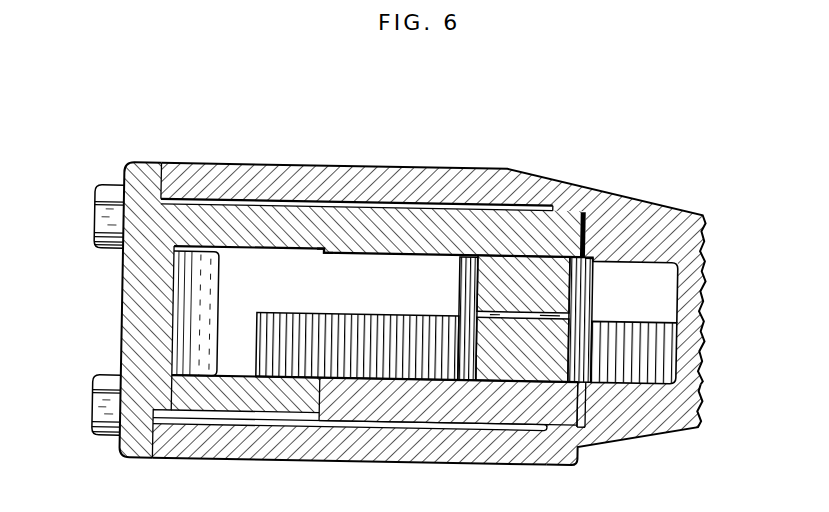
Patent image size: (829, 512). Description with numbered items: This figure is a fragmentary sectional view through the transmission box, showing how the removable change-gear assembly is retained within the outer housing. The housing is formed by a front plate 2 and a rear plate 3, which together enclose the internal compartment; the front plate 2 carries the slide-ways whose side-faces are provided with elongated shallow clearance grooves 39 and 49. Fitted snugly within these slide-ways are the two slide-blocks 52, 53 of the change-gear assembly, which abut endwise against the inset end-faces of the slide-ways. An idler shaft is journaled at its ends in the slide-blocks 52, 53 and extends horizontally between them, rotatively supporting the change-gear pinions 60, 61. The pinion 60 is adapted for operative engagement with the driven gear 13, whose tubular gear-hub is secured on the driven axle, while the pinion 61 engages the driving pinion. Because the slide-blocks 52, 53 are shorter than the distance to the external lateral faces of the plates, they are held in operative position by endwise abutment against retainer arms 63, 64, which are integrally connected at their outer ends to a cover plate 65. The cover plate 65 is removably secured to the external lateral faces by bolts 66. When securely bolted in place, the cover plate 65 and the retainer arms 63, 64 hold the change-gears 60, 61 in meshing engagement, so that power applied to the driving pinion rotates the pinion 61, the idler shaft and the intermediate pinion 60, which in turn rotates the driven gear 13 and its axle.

The front plate 2 is at (616, 192).
The rear plate 3 is at (664, 429).
The driven gear 13 is at (306, 316).
The clearance groove 39 is at (357, 192).
The clearance groove 49 is at (364, 441).
The slide-block 52 is at (398, 256).
The slide-block 53 is at (587, 410).
The change-gear pinion 60 is at (459, 282).
The change-gear pinion 61 is at (593, 317).
The retainer arm 63 is at (322, 252).
The retainer arm 64 is at (251, 381).
The cover plate 65 is at (118, 300).
The bolt 66 is at (93, 221).